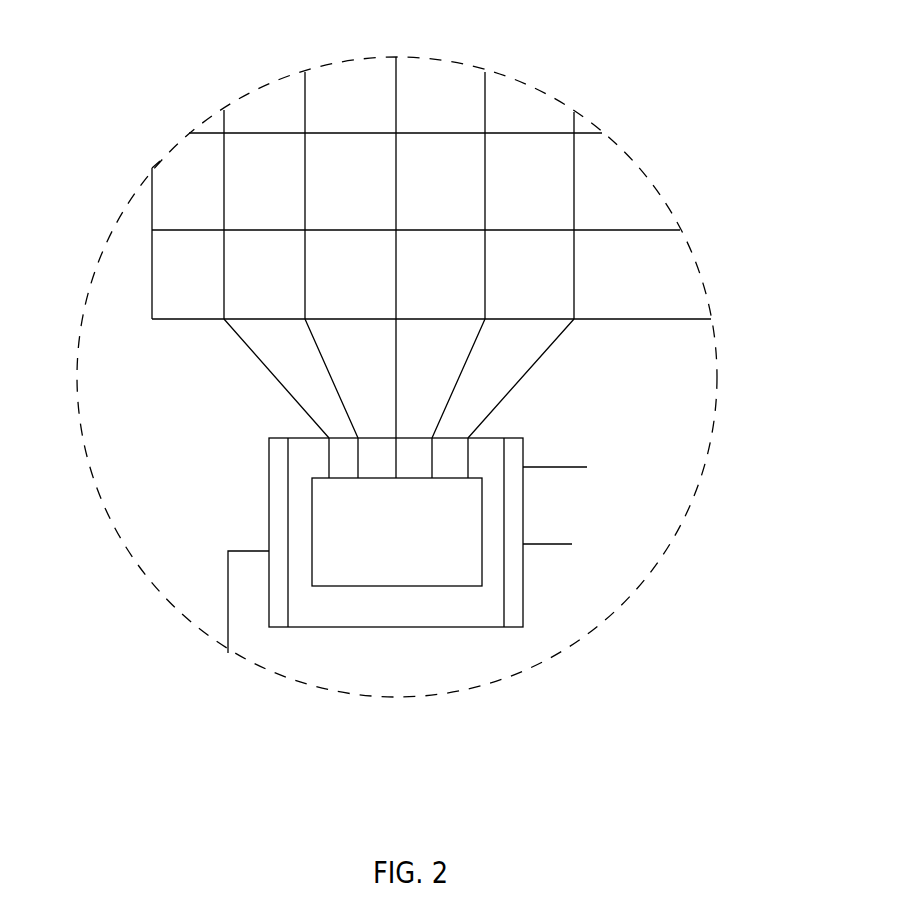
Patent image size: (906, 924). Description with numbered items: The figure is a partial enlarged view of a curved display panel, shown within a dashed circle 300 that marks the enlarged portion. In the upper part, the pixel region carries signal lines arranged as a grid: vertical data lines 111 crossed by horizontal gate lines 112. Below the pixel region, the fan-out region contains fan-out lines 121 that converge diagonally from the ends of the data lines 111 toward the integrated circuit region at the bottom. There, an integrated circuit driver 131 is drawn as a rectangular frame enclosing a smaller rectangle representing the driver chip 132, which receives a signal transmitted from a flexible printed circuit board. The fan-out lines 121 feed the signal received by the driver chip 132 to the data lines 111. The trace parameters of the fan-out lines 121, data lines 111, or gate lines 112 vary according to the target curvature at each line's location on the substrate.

The data line 111 is at (574, 185).
The gate line 112 is at (632, 230).
The fan-out line 121 is at (528, 371).
The integrated circuit driver 131 is at (269, 485).
The driver chip 132 is at (410, 557).
The enlarged display region 300 is at (397, 437).